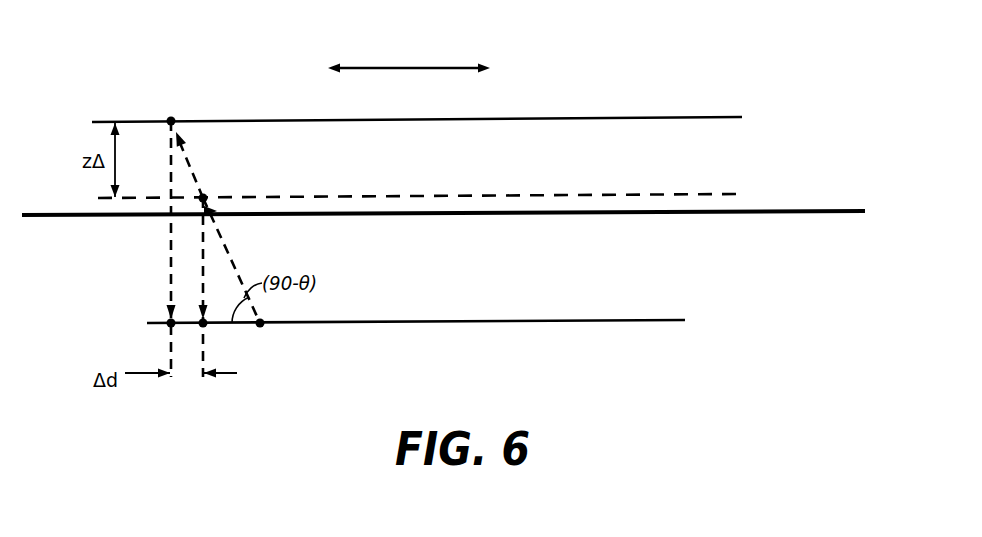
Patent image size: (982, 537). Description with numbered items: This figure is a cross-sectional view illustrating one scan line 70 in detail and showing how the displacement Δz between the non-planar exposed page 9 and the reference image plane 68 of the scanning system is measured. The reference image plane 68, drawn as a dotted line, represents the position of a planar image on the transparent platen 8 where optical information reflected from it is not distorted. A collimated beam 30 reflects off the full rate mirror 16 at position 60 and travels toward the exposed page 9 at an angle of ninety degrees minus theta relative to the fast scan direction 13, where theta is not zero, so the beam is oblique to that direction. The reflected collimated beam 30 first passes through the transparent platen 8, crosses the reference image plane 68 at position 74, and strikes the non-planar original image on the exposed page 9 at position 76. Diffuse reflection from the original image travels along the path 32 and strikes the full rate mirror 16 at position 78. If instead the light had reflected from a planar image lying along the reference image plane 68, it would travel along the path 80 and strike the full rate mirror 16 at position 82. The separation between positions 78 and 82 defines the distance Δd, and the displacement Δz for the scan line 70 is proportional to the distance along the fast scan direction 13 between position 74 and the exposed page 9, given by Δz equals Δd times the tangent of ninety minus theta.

The platen 8 is at (812, 210).
The exposed page 9 is at (595, 118).
The fast scan direction 13 is at (419, 66).
The full rate mirror 16 is at (597, 320).
The collimated beam 30 is at (232, 257).
The reflection path 32 is at (167, 245).
The reflection position 60 is at (262, 326).
The reference image plane 68 is at (604, 194).
The scan line 70 is at (777, 110).
The reference plane crossing position 74 is at (204, 196).
The page striking position 76 is at (171, 120).
The mirror striking position 78 is at (170, 322).
The planar reflection path 80 is at (203, 248).
The planar mirror striking position 82 is at (205, 326).